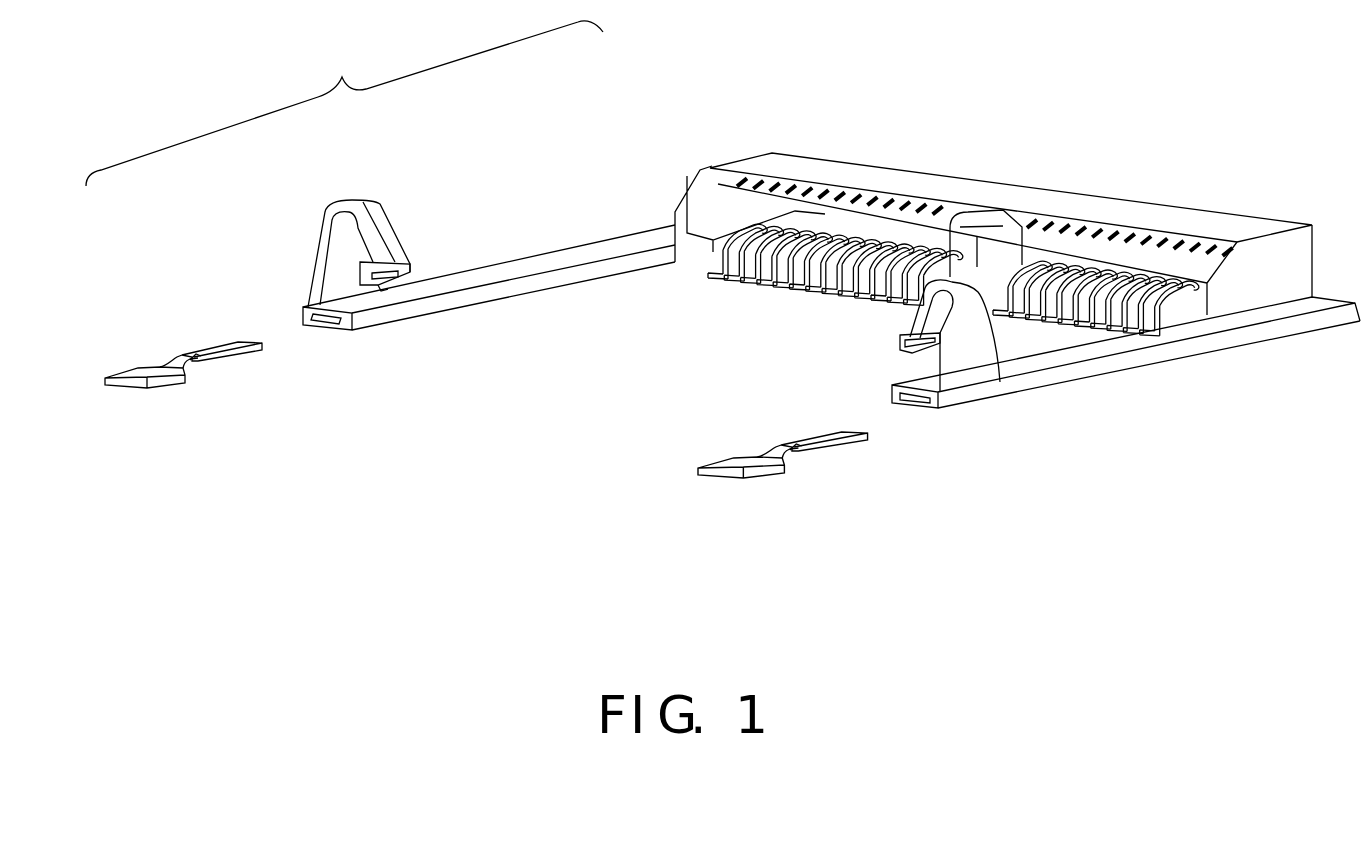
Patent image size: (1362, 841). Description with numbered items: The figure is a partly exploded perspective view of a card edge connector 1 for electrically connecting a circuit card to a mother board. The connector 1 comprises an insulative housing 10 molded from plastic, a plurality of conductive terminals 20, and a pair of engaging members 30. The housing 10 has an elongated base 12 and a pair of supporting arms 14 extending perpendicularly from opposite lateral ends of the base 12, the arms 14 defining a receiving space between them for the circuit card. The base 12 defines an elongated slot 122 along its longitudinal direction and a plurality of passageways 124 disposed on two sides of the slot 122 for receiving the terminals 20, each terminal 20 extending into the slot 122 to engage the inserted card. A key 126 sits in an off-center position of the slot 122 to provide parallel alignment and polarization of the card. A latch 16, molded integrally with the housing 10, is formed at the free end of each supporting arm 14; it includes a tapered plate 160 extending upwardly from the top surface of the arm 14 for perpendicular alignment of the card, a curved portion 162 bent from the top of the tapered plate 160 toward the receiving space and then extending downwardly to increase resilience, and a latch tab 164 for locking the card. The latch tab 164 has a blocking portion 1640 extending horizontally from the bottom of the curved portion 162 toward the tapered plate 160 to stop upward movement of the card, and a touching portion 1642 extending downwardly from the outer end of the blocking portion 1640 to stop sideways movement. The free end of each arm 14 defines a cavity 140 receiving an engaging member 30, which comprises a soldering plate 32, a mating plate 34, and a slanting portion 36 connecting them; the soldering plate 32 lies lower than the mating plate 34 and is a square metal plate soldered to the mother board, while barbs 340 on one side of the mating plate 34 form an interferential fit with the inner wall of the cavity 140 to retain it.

The card edge connector 1 is at (344, 103).
The insulative housing 10 is at (668, 197).
The base 12 is at (807, 167).
The supporting arms 14 is at (520, 268).
The latch 16 is at (318, 212).
The conductive terminals 20 is at (722, 283).
The engaging members 30 is at (170, 400).
The soldering plate 32 is at (137, 373).
The mating plate 34 is at (222, 348).
The slanting portion 36 is at (168, 360).
The slot 122 is at (740, 203).
The passageways 124 is at (1177, 250).
The key 126 is at (960, 237).
The cavity 140 is at (333, 327).
The tapered plate 160 is at (337, 265).
The curved portion 162 is at (380, 228).
The latch tab 164 is at (587, 363).
The barbs 340 is at (207, 350).
The blocking portion 1640 is at (373, 281).
The touching portion 1642 is at (378, 283).